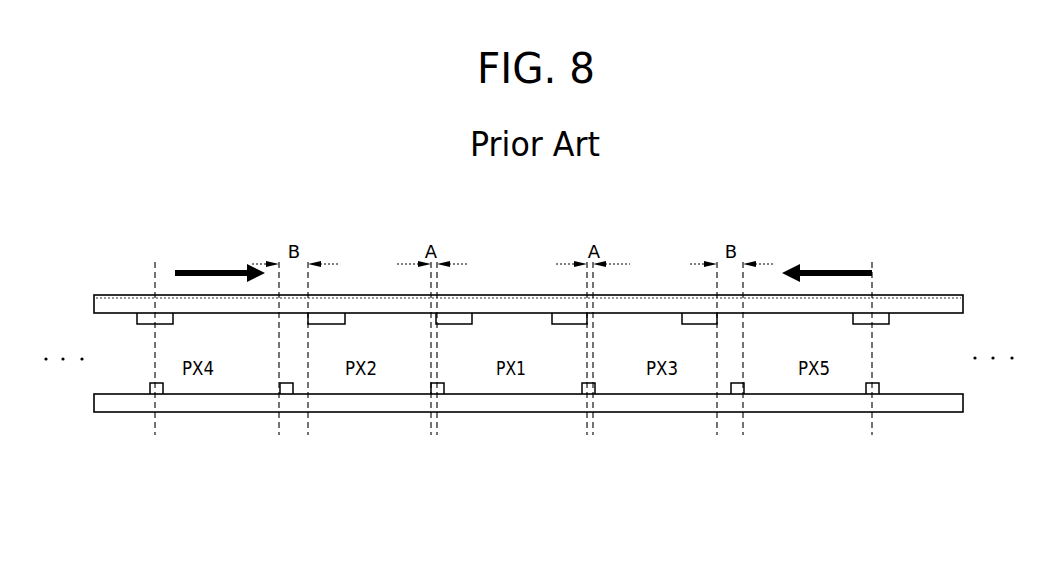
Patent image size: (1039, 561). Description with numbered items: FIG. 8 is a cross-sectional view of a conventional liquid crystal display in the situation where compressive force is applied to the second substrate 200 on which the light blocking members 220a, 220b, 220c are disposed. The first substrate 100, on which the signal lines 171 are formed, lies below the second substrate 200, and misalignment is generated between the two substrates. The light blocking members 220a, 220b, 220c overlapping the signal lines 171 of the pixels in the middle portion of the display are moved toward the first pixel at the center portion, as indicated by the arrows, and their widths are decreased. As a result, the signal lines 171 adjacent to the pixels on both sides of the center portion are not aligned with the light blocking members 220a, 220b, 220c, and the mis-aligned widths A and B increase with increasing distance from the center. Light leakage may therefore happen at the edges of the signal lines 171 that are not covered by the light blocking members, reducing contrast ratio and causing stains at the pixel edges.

The second substrate 200 is at (952, 302).
The first substrate 100 is at (952, 403).
The light blocking member 220a is at (563, 318).
The light blocking member 220b is at (690, 318).
The light blocking member 220c is at (885, 318).
The signal line 171 is at (740, 388).